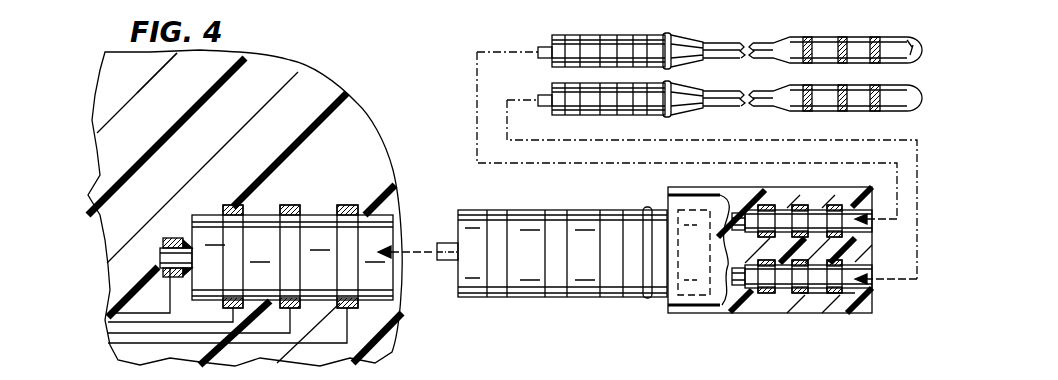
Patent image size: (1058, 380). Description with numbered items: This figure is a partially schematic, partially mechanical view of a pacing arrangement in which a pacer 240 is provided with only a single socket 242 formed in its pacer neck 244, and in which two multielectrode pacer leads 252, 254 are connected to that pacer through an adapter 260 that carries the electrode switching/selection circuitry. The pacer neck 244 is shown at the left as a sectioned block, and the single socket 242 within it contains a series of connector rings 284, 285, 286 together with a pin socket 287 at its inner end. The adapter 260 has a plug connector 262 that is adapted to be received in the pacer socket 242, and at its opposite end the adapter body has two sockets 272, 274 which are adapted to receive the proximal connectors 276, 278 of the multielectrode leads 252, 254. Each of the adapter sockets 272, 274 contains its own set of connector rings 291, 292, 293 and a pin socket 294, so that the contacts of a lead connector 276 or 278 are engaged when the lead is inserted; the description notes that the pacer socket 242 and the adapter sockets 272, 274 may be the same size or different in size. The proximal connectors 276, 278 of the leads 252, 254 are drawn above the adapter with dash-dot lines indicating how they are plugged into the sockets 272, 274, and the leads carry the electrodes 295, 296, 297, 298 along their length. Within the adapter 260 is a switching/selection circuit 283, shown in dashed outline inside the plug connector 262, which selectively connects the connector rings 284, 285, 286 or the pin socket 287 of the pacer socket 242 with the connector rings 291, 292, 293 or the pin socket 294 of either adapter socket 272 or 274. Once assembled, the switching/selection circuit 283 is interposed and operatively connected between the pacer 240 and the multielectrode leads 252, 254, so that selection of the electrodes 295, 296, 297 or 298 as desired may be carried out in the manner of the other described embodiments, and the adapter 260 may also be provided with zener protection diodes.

The pacer 240 is at (407, 337).
The socket 242 is at (393, 295).
The pacer neck 244 is at (118, 77).
The multielectrode pacer lead 252 is at (690, 32).
The multielectrode pacer lead 254 is at (711, 113).
The adapter 260 is at (652, 315).
The plug connector 262 is at (532, 290).
The socket 272 is at (867, 290).
The socket 274 is at (870, 227).
The proximal connector 276 is at (590, 43).
The proximal connector 278 is at (590, 107).
The switching/selection circuit 283 is at (695, 295).
The connector ring 284 is at (350, 207).
The connector ring 285 is at (290, 210).
The connector ring 286 is at (243, 206).
The pin socket 287 is at (173, 238).
The connector ring 291 is at (838, 297).
The connector ring 292 is at (795, 312).
The connector ring 293 is at (775, 310).
The pin socket 294 is at (733, 310).
The electrode 295 is at (812, 40).
The electrode 296 is at (842, 38).
The electrode 297 is at (883, 43).
The electrode 298 is at (915, 50).